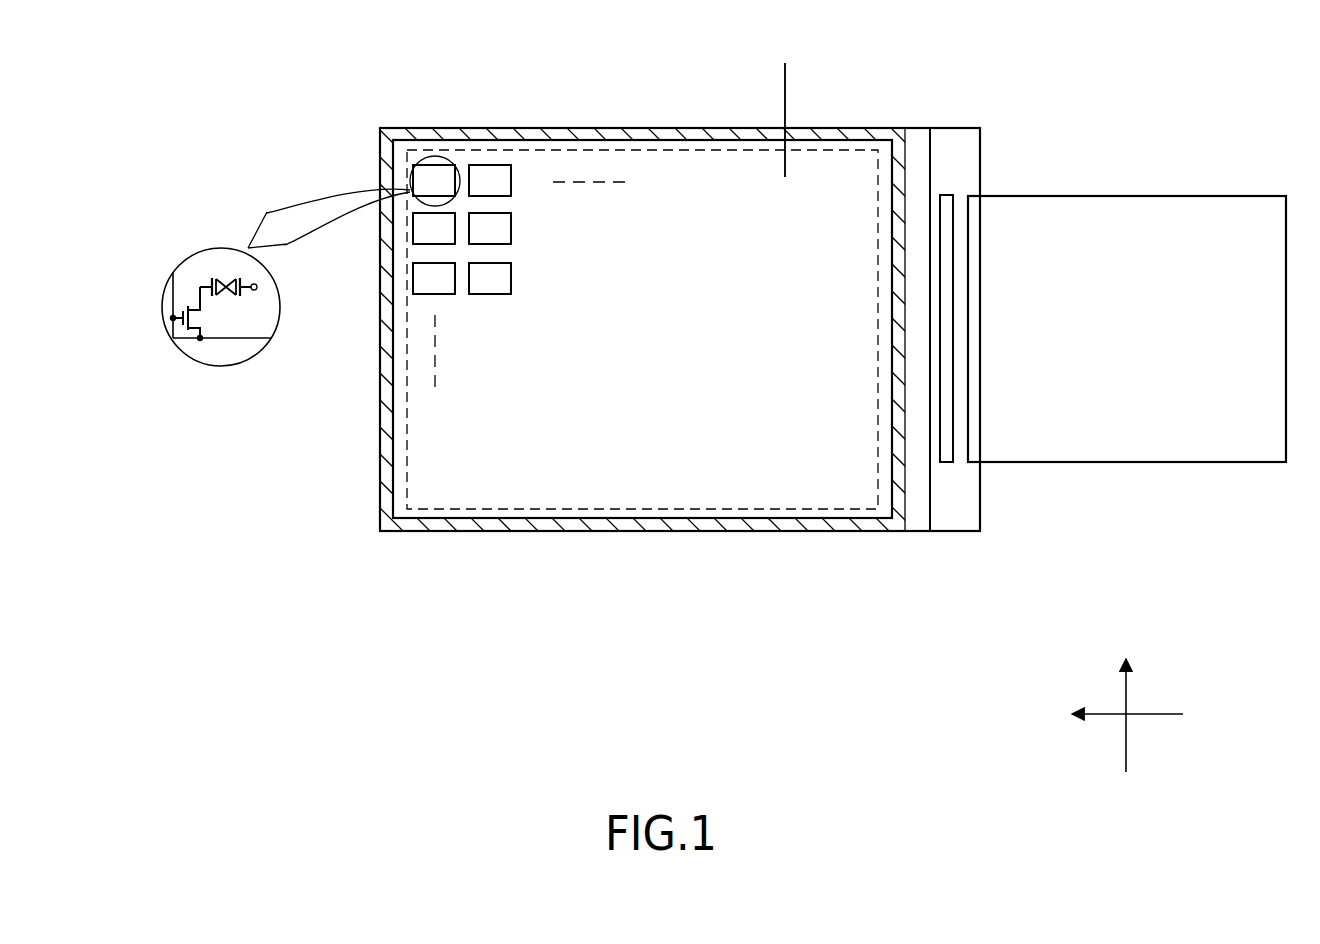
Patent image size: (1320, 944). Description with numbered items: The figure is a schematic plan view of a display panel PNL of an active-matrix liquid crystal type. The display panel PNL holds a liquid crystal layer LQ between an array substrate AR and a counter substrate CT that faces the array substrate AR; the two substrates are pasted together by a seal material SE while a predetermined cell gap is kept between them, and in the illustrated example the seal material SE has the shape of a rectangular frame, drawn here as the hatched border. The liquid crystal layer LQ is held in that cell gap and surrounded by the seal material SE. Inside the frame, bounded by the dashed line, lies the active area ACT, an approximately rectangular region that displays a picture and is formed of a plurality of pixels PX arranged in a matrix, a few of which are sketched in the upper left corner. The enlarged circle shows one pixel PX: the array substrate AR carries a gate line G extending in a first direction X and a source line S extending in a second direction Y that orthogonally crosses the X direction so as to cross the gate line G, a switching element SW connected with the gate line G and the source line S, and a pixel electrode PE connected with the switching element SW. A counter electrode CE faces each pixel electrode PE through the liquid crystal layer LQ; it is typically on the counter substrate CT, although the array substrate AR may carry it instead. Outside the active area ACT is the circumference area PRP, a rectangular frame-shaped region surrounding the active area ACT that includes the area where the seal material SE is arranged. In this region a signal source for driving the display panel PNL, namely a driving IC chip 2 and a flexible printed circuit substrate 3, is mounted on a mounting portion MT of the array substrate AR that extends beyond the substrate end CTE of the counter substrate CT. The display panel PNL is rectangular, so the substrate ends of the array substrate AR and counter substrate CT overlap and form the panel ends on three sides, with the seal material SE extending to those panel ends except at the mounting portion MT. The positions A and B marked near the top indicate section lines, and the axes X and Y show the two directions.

The display panel PNL is at (953, 534).
The circumference area PRP is at (913, 129).
The counter substrate CT is at (915, 521).
The substrate end CTE is at (938, 146).
The array substrate AR is at (970, 517).
The driving IC chip 2 is at (945, 195).
The mounting portion MT is at (961, 469).
The flexible printed circuit substrate 3 is at (1138, 196).
The seal material SE is at (696, 128).
The active area ACT is at (745, 512).
The pixel PX is at (435, 164).
The gate line G is at (173, 293).
The source line S is at (230, 339).
The switching element SW is at (207, 318).
The pixel electrode PE is at (198, 280).
The liquid crystal layer LQ is at (226, 277).
The counter electrode CE is at (258, 288).
The section line A is at (789, 165).
The section line B is at (789, 72).
The first direction X is at (1126, 698).
The second direction Y is at (1114, 715).